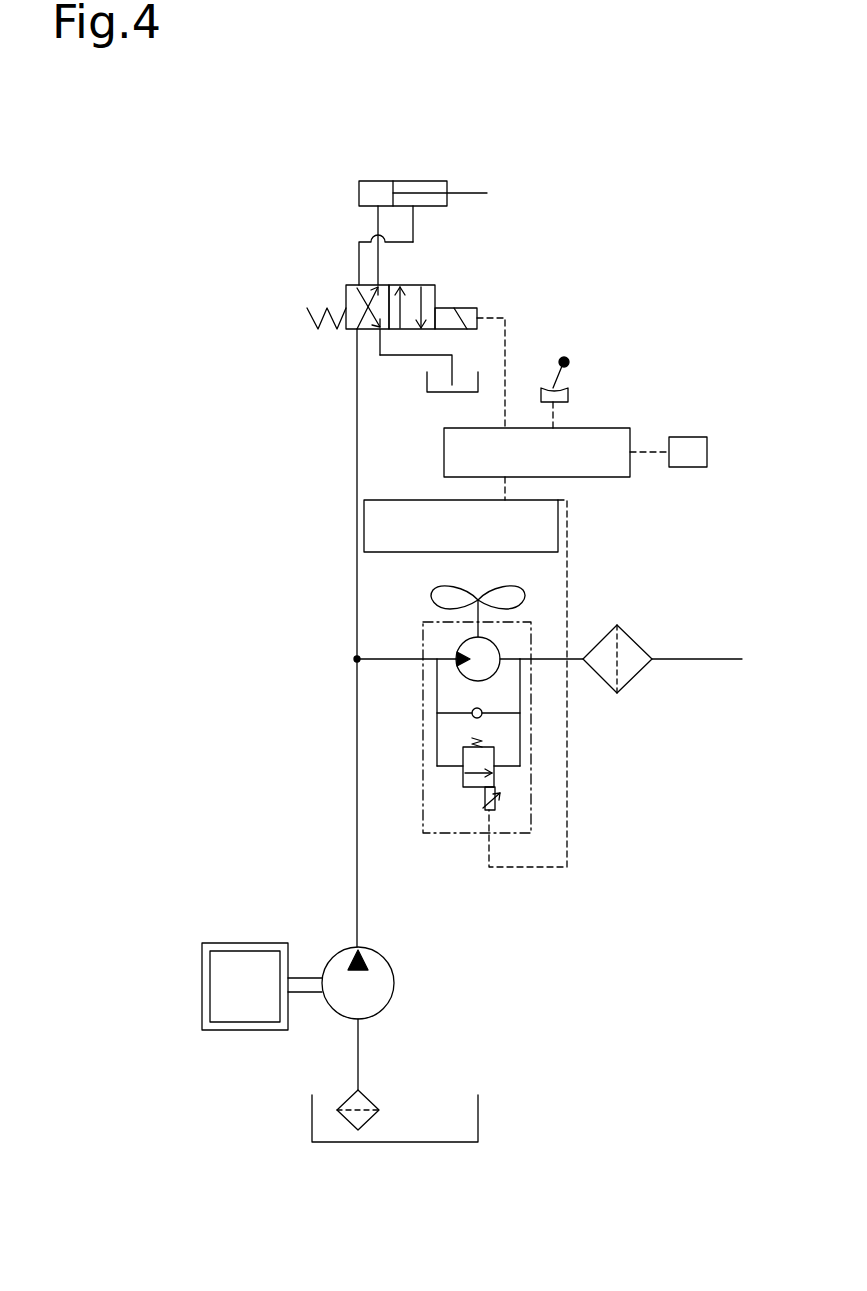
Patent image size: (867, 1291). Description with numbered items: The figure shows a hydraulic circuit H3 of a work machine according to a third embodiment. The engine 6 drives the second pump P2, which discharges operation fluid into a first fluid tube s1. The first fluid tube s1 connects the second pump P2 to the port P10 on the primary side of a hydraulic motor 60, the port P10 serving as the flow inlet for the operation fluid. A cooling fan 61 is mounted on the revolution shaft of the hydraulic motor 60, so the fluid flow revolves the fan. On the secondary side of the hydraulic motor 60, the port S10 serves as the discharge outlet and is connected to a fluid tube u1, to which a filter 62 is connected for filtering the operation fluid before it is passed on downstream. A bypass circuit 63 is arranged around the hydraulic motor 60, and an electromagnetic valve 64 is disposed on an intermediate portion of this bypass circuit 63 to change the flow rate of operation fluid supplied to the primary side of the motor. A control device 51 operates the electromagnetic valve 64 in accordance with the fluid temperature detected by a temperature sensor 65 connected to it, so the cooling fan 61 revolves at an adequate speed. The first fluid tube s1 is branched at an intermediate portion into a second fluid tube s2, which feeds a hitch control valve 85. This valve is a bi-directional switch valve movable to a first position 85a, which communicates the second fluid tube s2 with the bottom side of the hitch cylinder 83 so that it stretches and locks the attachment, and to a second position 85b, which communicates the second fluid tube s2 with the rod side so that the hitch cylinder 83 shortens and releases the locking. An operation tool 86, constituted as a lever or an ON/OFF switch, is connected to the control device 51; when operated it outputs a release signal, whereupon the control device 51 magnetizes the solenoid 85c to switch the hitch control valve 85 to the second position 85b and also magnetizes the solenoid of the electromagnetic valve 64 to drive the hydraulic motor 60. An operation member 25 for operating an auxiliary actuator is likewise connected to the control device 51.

The hitch cylinder 83 is at (420, 181).
The hitch control valve 85 is at (415, 266).
The first position 85a is at (346, 284).
The second position 85b is at (413, 284).
The solenoid 85c is at (463, 307).
The hydraulic circuit H3 is at (573, 242).
The control device 51 is at (444, 441).
The operation member 25 is at (568, 393).
The operation tool 86 is at (692, 437).
The temperature sensor 65 is at (445, 500).
The second fluid tube s2 is at (357, 560).
The port P10 is at (423, 657).
The hydraulic motor 60 is at (497, 647).
The cooling fan 61 is at (517, 592).
The port S10 is at (533, 657).
The bypass circuit 63 is at (520, 757).
The electromagnetic valve 64 is at (485, 793).
The fluid tube u1 is at (577, 677).
The filter 62 is at (637, 677).
The first fluid tube s1 is at (357, 797).
The second pump P2 is at (333, 955).
The engine 6 is at (232, 943).